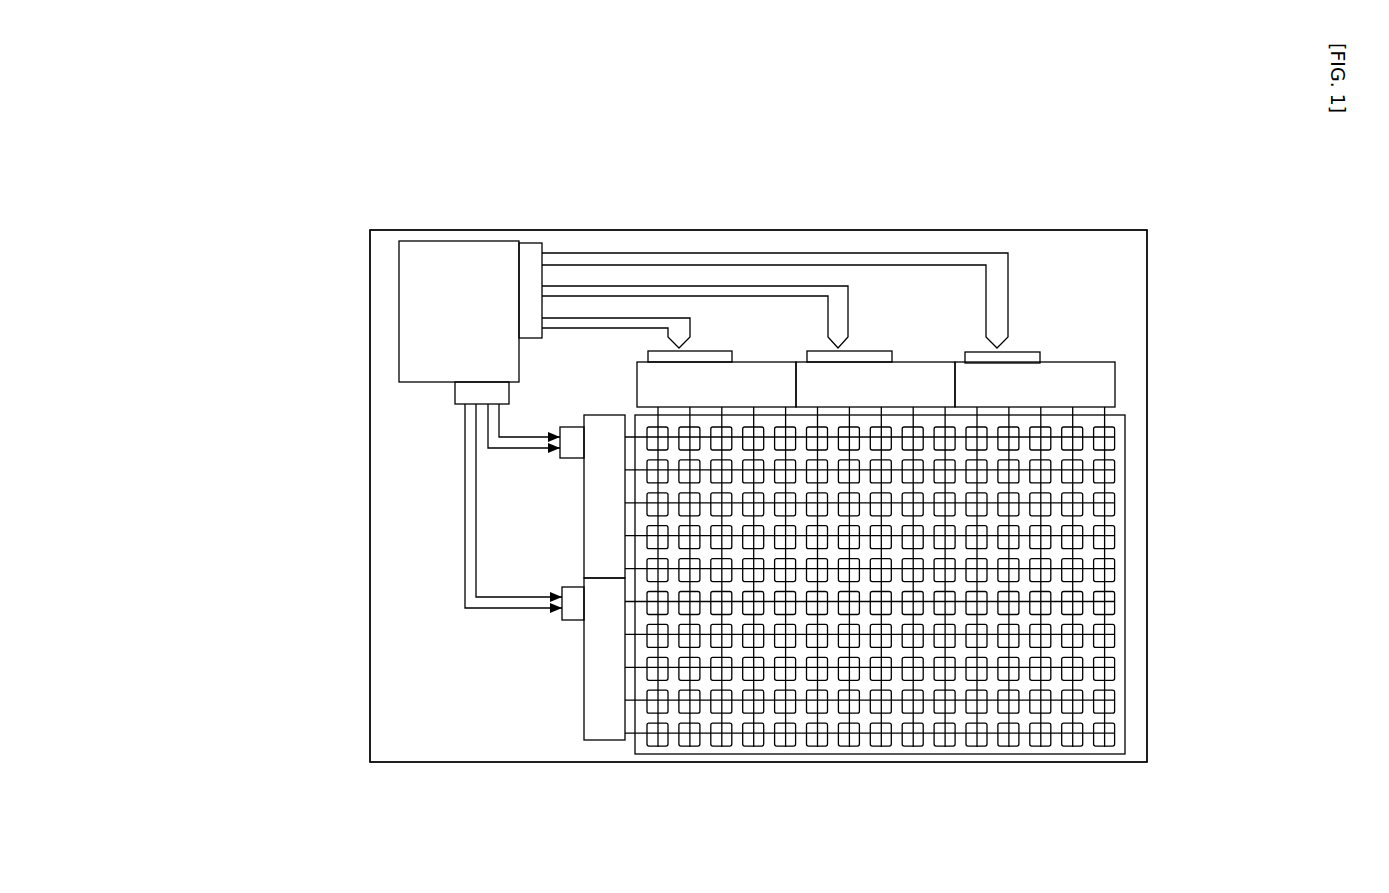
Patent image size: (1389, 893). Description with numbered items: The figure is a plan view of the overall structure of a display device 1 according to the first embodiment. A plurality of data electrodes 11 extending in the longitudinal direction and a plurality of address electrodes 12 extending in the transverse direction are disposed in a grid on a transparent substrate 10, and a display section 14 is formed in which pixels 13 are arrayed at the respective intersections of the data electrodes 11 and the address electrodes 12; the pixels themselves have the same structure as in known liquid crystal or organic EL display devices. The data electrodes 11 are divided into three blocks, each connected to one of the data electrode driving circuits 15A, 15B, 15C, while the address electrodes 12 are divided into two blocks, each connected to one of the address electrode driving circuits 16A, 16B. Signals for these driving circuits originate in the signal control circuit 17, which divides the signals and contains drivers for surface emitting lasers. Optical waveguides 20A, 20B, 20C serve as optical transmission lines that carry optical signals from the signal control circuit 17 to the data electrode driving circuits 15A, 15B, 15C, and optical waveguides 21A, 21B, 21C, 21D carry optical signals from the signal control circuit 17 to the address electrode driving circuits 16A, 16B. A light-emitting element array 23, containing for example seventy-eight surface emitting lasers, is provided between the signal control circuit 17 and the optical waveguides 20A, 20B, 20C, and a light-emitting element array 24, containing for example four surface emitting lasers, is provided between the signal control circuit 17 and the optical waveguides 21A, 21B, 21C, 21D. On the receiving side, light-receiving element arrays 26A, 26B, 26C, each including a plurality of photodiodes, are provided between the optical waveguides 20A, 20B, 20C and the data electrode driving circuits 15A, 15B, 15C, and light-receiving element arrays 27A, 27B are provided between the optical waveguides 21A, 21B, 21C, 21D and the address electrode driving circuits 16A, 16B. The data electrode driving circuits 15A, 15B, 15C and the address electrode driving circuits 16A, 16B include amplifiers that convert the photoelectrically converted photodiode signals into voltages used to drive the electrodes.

The display device 1 is at (1065, 228).
The transparent substrate 10 is at (1133, 762).
The data electrodes 11 is at (1073, 413).
The address electrodes 12 is at (633, 699).
The pixels 13 is at (815, 747).
The display section 14 is at (990, 754).
The data electrode driving circuit 15A is at (770, 387).
The data electrode driving circuit 15B is at (920, 385).
The data electrode driving circuit 15C is at (1082, 385).
The address electrode driving circuit 16A is at (596, 518).
The address electrode driving circuit 16B is at (603, 720).
The signal control circuit 17 is at (408, 290).
The optical waveguide 20A is at (608, 320).
The optical waveguide 20B is at (655, 295).
The optical waveguide 20C is at (563, 160).
The optical waveguide 21A is at (489, 414).
The optical waveguide 21B is at (489, 446).
The optical waveguide 21C is at (478, 478).
The optical waveguide 21D is at (467, 505).
The light-emitting element array 23 is at (530, 258).
The light-emitting element array 24 is at (470, 390).
The light-receiving element array 26A is at (722, 357).
The light-receiving element array 26B is at (865, 357).
The light-receiving element array 26C is at (1020, 358).
The light-receiving element array 27A is at (568, 450).
The light-receiving element array 27B is at (571, 620).